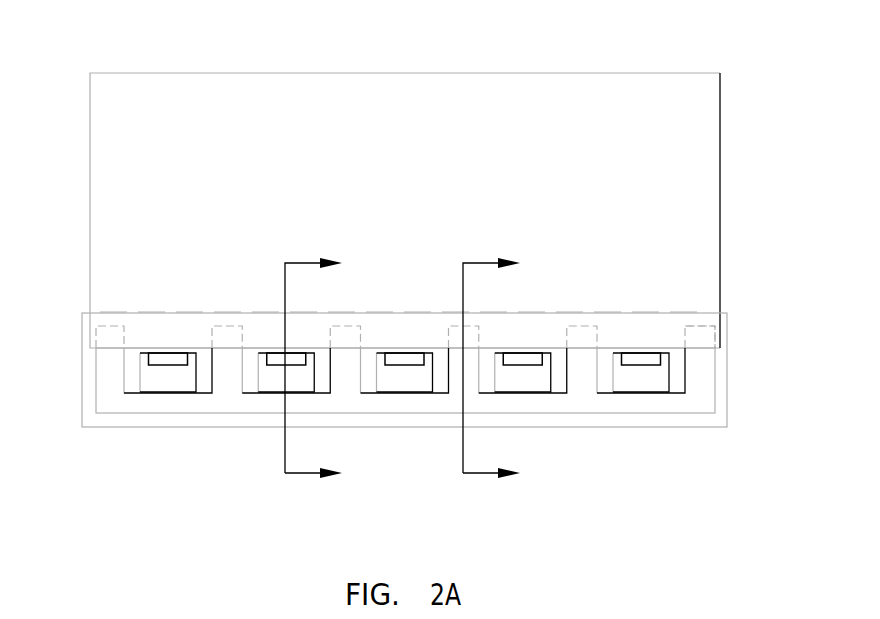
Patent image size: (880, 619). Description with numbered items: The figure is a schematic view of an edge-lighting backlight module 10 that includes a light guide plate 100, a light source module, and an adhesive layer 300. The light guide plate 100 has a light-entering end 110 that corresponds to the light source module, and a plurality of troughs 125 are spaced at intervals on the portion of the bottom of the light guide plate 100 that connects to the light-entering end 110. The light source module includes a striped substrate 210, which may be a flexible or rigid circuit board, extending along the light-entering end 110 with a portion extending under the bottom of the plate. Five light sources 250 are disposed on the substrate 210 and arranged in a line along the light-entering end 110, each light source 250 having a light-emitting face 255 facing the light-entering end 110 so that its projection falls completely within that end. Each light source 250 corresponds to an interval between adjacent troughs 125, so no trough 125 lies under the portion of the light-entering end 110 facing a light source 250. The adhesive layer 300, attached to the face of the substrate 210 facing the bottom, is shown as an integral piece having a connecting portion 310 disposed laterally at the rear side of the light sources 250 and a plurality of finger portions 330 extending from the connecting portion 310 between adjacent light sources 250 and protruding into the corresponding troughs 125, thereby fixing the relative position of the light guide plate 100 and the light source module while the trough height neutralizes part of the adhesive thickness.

The backlight module 10 is at (106, 49).
The light guide plate 100 is at (706, 103).
The light-entering end 110 is at (124, 349).
The troughs 125 is at (104, 322).
The substrate 210 is at (95, 420).
The light sources 250 is at (422, 391).
The light-emitting face 255 is at (643, 353).
The adhesive layer 300 is at (786, 462).
The connecting portion 310 is at (670, 402).
The finger portions 330 is at (700, 335).